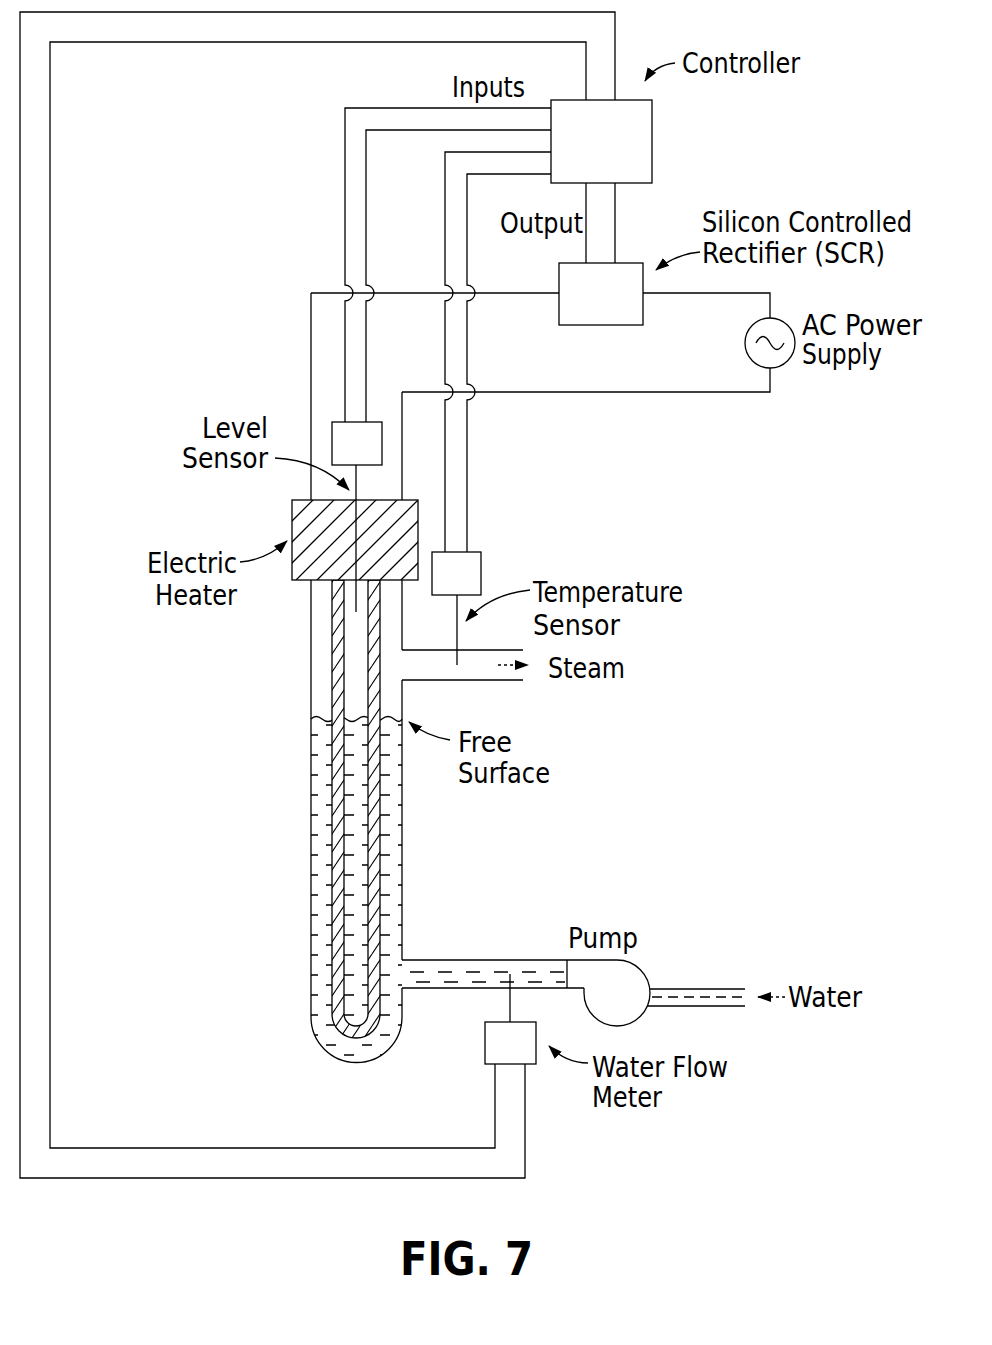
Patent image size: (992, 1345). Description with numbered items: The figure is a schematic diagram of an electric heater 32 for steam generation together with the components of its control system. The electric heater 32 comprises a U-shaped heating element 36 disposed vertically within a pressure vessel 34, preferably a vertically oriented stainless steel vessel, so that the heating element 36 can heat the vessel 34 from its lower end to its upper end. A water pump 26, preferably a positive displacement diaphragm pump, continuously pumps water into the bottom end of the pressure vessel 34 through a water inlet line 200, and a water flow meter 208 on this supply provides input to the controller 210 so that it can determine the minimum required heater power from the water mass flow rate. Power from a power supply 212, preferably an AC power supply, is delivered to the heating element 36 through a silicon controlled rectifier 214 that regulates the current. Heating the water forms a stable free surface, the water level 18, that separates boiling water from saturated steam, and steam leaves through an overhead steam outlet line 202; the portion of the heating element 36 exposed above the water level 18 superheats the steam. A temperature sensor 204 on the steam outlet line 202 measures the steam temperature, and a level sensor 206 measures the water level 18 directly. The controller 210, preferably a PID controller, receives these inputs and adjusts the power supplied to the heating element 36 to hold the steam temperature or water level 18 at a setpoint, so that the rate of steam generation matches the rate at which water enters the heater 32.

The controller 210 is at (652, 140).
The silicon controlled rectifier 214 is at (605, 325).
The power supply 212 is at (778, 367).
The level sensor 206 is at (337, 422).
The temperature sensor 204 is at (481, 570).
The steam outlet line 202 is at (505, 681).
The water inlet line 200 is at (450, 960).
The water flow meter 208 is at (485, 1043).
The water pump 26 is at (641, 972).
The electric heater 32 is at (208, 720).
The water level 18 is at (317, 718).
The heating element 36 is at (333, 852).
The pressure vessel 34 is at (311, 945).